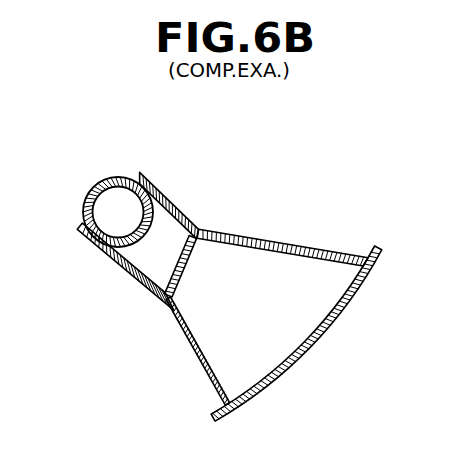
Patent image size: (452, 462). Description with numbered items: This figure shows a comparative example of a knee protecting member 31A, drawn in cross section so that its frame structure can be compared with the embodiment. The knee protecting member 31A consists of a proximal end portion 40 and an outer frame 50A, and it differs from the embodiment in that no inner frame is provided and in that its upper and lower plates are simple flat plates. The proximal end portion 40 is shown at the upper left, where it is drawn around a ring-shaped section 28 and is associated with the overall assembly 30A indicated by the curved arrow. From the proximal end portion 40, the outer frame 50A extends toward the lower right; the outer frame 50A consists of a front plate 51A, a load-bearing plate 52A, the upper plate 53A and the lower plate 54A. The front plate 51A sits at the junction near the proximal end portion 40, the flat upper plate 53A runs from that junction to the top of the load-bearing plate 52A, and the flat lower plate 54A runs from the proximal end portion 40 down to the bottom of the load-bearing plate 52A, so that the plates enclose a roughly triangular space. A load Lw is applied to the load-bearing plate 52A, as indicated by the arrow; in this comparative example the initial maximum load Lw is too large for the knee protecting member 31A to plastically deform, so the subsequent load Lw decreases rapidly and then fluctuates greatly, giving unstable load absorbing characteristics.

The tubular support member 28 is at (105, 180).
The comparative example wiper blade assembly 30A is at (322, 178).
The knee protecting member 31A is at (82, 315).
The proximal end portion 40 is at (124, 287).
The outer frame 50A is at (178, 349).
The front plate 51A is at (190, 247).
The load-bearing plate 52A is at (323, 341).
The upper plate 53A is at (266, 240).
The lower plate 54A is at (204, 369).
The load Lw is at (356, 306).